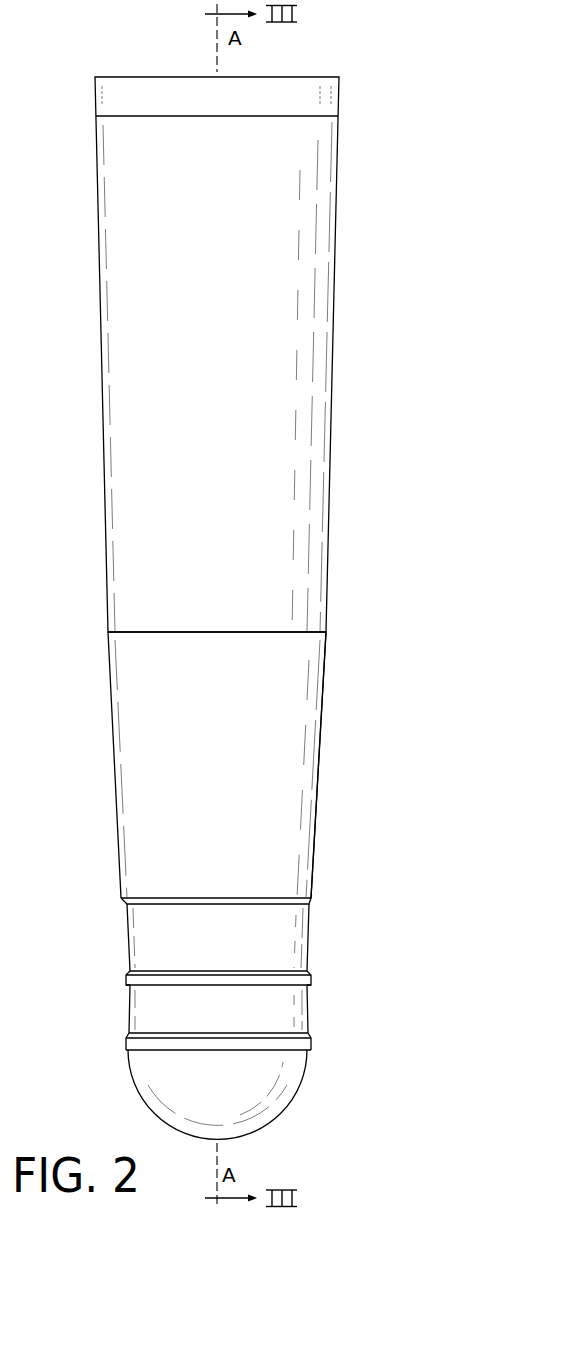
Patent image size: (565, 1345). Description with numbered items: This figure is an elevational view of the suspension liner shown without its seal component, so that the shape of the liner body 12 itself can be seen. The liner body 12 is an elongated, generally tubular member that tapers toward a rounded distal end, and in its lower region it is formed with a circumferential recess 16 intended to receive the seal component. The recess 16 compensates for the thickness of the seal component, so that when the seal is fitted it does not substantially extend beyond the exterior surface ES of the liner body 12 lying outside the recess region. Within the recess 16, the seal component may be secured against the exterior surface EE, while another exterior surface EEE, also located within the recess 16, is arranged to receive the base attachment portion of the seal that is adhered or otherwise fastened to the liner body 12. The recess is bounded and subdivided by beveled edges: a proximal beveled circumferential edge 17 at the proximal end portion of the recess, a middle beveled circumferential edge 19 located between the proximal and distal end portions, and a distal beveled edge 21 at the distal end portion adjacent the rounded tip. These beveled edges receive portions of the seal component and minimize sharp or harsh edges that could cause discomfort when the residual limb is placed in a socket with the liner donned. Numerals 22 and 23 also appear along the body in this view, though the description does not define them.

The liner body 12 is at (329, 467).
The upper tube portion 22 is at (8, 523).
The lower tube portion 23 is at (163, 765).
The exterior surface ES is at (332, 679).
The proximal beveled circumferential edge 17 is at (120, 903).
The circumferential recess 16 is at (127, 948).
The exterior surface EE is at (319, 941).
The middle beveled circumferential edge 19 is at (128, 977).
The exterior surface EEE is at (318, 1009).
The distal beveled edge 21 is at (128, 1033).